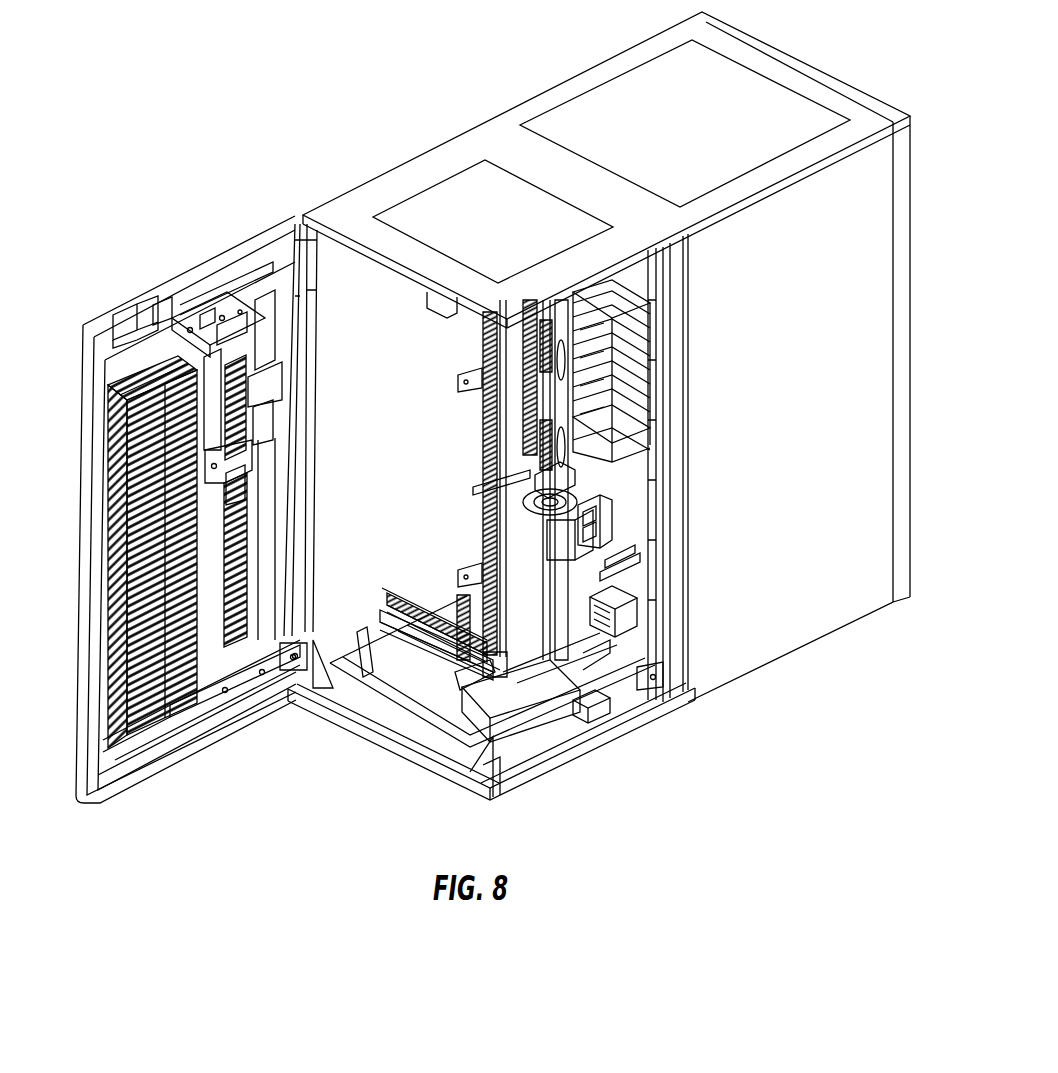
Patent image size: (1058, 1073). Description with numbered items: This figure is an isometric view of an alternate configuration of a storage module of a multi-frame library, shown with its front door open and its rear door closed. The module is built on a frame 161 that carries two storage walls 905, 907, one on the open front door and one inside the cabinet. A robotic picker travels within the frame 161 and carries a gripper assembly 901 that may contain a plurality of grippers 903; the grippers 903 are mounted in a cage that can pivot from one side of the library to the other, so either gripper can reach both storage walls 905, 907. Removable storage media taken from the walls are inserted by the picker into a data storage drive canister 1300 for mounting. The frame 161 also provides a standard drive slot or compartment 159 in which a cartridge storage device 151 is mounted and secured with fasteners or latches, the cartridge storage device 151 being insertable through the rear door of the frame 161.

The frame 161 is at (815, 36).
The storage wall 907 is at (80, 672).
The storage wall 905 is at (483, 418).
The data storage drive canister 1300 is at (645, 320).
The gripper assembly 901 is at (618, 486).
The grippers 903 is at (613, 520).
The drive slot or compartment 159 is at (628, 575).
The cartridge storage device 151 is at (637, 607).